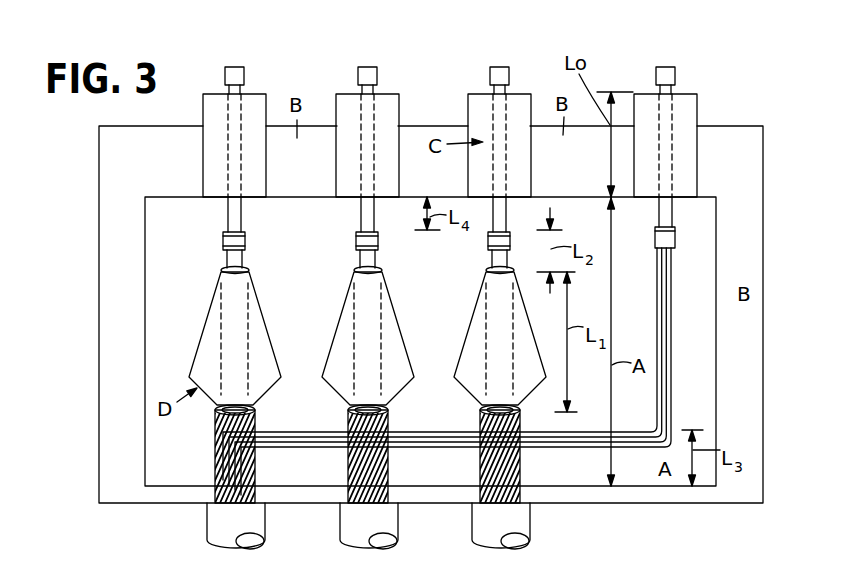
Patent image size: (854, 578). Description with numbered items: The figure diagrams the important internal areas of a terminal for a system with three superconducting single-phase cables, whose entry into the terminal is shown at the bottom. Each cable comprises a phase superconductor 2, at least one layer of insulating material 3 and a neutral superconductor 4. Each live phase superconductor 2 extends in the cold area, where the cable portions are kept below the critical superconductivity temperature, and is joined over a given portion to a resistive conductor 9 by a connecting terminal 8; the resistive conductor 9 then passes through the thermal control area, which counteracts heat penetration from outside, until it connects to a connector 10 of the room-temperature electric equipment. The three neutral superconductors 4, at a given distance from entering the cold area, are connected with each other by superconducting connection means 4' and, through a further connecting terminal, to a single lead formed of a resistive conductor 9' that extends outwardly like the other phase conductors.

The connector 10 is at (233, 65).
The resistive conductor 9 is at (355, 162).
The resistive conductor 9' is at (680, 160).
The connecting terminal 8 is at (214, 241).
The phase superconductor 2 is at (244, 259).
The layer of insulating material 3 is at (216, 329).
The neutral superconductor 4 is at (367, 477).
The superconducting connection means 4' is at (447, 367).